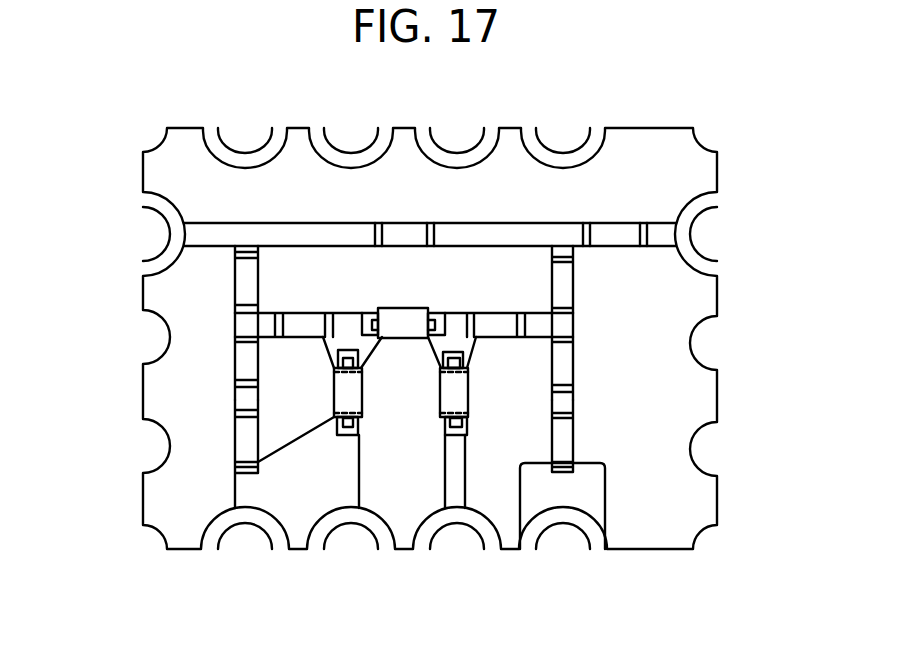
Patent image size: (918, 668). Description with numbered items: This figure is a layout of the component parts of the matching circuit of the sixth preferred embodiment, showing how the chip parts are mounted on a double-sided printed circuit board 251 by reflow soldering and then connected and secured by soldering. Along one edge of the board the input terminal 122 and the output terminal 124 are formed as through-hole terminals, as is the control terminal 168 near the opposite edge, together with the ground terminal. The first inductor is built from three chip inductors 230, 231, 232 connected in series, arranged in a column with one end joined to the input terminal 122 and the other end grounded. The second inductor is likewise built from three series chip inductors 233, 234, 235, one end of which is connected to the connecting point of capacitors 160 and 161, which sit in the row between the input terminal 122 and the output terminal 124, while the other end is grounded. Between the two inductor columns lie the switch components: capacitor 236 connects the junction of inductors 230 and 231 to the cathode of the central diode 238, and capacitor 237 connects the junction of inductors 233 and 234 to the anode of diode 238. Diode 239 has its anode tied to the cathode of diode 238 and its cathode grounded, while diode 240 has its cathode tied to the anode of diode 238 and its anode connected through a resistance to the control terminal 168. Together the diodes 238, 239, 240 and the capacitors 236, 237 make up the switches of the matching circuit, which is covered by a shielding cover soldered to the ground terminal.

The input terminal 122 is at (167, 236).
The output terminal 124 is at (690, 238).
The capacitor 160 is at (413, 232).
The capacitor 161 is at (615, 235).
The control terminal 168 is at (450, 523).
The inductor 230 is at (237, 277).
The inductor 231 is at (235, 362).
The inductor 232 is at (237, 442).
The inductor 233 is at (563, 277).
The inductor 234 is at (568, 362).
The inductor 235 is at (565, 437).
The capacitor 236 is at (303, 323).
The capacitor 237 is at (495, 322).
The diode 238 is at (403, 322).
The diode 239 is at (353, 395).
The diode 240 is at (458, 398).
The double-sided printed circuit board 251 is at (695, 168).